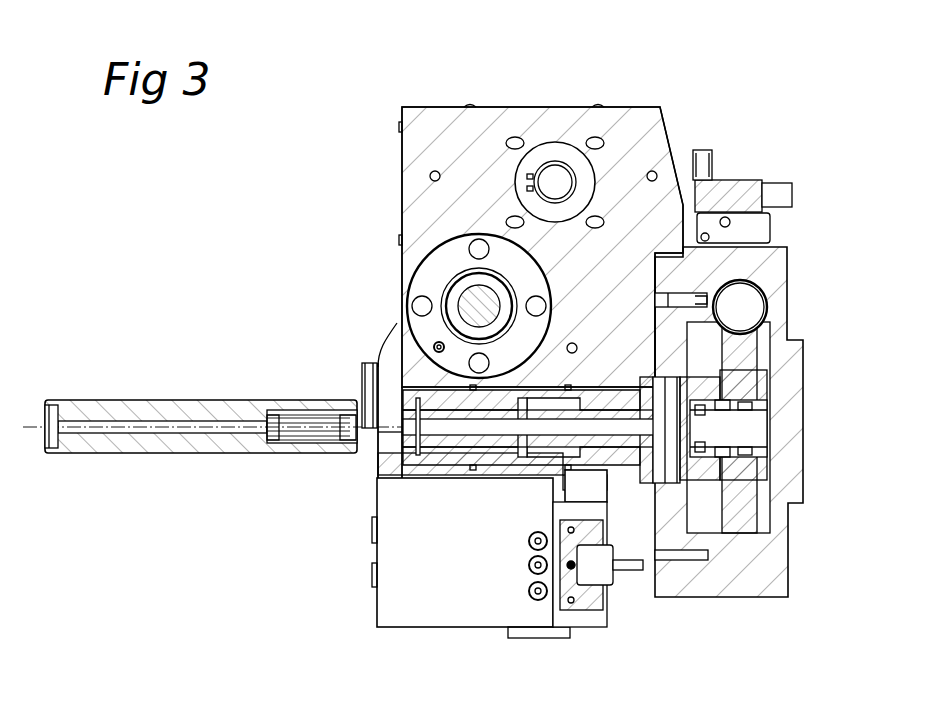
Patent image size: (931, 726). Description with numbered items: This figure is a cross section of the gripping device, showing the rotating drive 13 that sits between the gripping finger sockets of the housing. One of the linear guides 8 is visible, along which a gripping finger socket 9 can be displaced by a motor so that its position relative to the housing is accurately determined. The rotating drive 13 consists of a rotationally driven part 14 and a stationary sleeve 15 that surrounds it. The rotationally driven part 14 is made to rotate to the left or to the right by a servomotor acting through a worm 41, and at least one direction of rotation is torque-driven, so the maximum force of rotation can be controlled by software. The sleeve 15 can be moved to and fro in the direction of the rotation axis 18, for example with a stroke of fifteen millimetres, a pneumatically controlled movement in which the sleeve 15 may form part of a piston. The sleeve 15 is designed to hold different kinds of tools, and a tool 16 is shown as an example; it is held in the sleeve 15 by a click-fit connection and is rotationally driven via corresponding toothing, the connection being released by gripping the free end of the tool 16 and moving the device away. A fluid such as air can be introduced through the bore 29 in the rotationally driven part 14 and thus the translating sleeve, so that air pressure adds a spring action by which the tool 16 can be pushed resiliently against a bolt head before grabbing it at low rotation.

The guide 8 is at (591, 600).
The gripping finger socket 9 is at (410, 602).
The rotating drive 13 is at (388, 417).
The rotationally driven part 14 is at (413, 437).
The sleeve 15 is at (426, 388).
The tool 16 is at (193, 413).
The rotation axis 18 is at (33, 425).
The bore 29 is at (567, 428).
The worm 41 is at (743, 300).